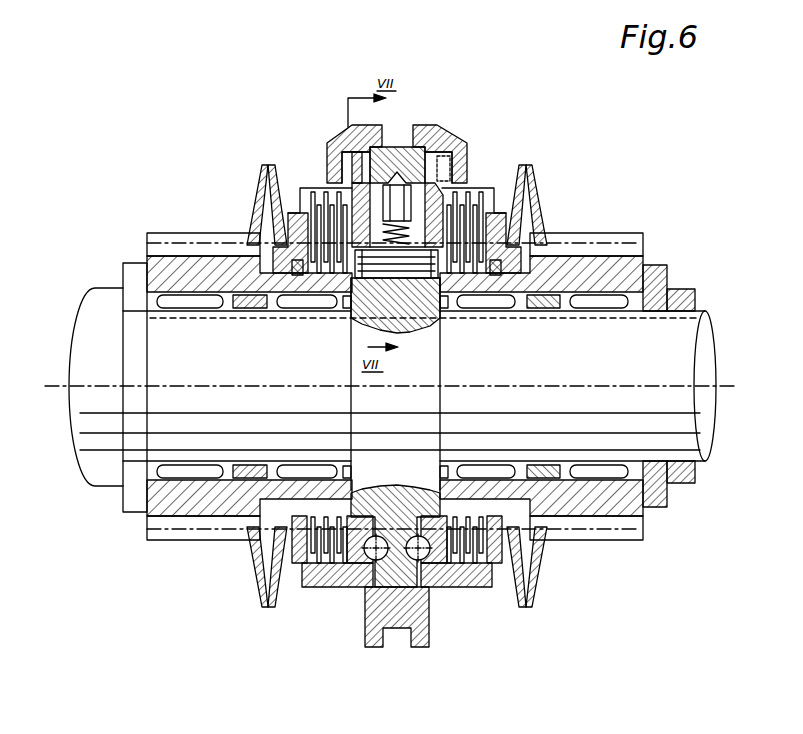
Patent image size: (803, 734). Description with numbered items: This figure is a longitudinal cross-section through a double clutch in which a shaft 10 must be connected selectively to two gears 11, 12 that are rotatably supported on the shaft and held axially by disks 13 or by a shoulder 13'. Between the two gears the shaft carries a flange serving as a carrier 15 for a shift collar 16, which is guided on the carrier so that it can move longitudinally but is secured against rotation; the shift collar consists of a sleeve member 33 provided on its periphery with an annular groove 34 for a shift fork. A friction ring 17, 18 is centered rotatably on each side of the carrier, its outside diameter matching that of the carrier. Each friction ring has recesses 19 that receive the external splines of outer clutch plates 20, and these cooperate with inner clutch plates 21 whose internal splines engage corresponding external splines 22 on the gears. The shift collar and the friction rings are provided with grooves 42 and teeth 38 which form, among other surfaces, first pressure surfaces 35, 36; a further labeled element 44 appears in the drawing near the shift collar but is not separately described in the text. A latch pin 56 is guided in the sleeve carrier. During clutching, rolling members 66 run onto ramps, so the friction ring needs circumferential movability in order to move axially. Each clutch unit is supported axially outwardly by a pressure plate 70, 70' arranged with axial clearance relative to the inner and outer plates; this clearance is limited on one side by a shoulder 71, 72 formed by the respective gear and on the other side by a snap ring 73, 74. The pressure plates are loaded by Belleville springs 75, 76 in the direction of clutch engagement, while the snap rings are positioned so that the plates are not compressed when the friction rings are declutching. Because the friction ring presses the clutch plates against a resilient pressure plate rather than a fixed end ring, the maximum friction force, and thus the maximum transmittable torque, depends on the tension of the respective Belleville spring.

The shaft 10 is at (663, 510).
The gear 11 is at (613, 242).
The gear 12 is at (215, 248).
The disk 13 is at (695, 375).
The shoulder 13' is at (83, 387).
The carrier 15 is at (443, 437).
The shift collar 16 is at (397, 617).
The friction ring 17 is at (450, 590).
The friction ring 18 is at (325, 582).
The recess 19 is at (462, 192).
The outer clutch plate 20 is at (492, 203).
The inner clutch plate 21 is at (470, 272).
The external splines 22 is at (437, 275).
The sleeve member 33 is at (430, 147).
The annular groove 34 is at (398, 146).
The first pressure surface 35 is at (347, 132).
The first pressure surface 36 is at (447, 162).
The teeth 38 is at (353, 182).
The groove 42 is at (352, 170).
The cavity 44 is at (340, 176).
The latch pin 56 is at (398, 174).
The rolling member 66 is at (362, 590).
The pressure plate 70 is at (545, 340).
The pressure plate 70' is at (311, 288).
The shoulder 71 is at (557, 303).
The shoulder 72 is at (250, 298).
The snap ring 73 is at (492, 268).
The snap ring 74 is at (298, 270).
The Belleville spring 75 is at (542, 213).
The Belleville spring 76 is at (253, 567).